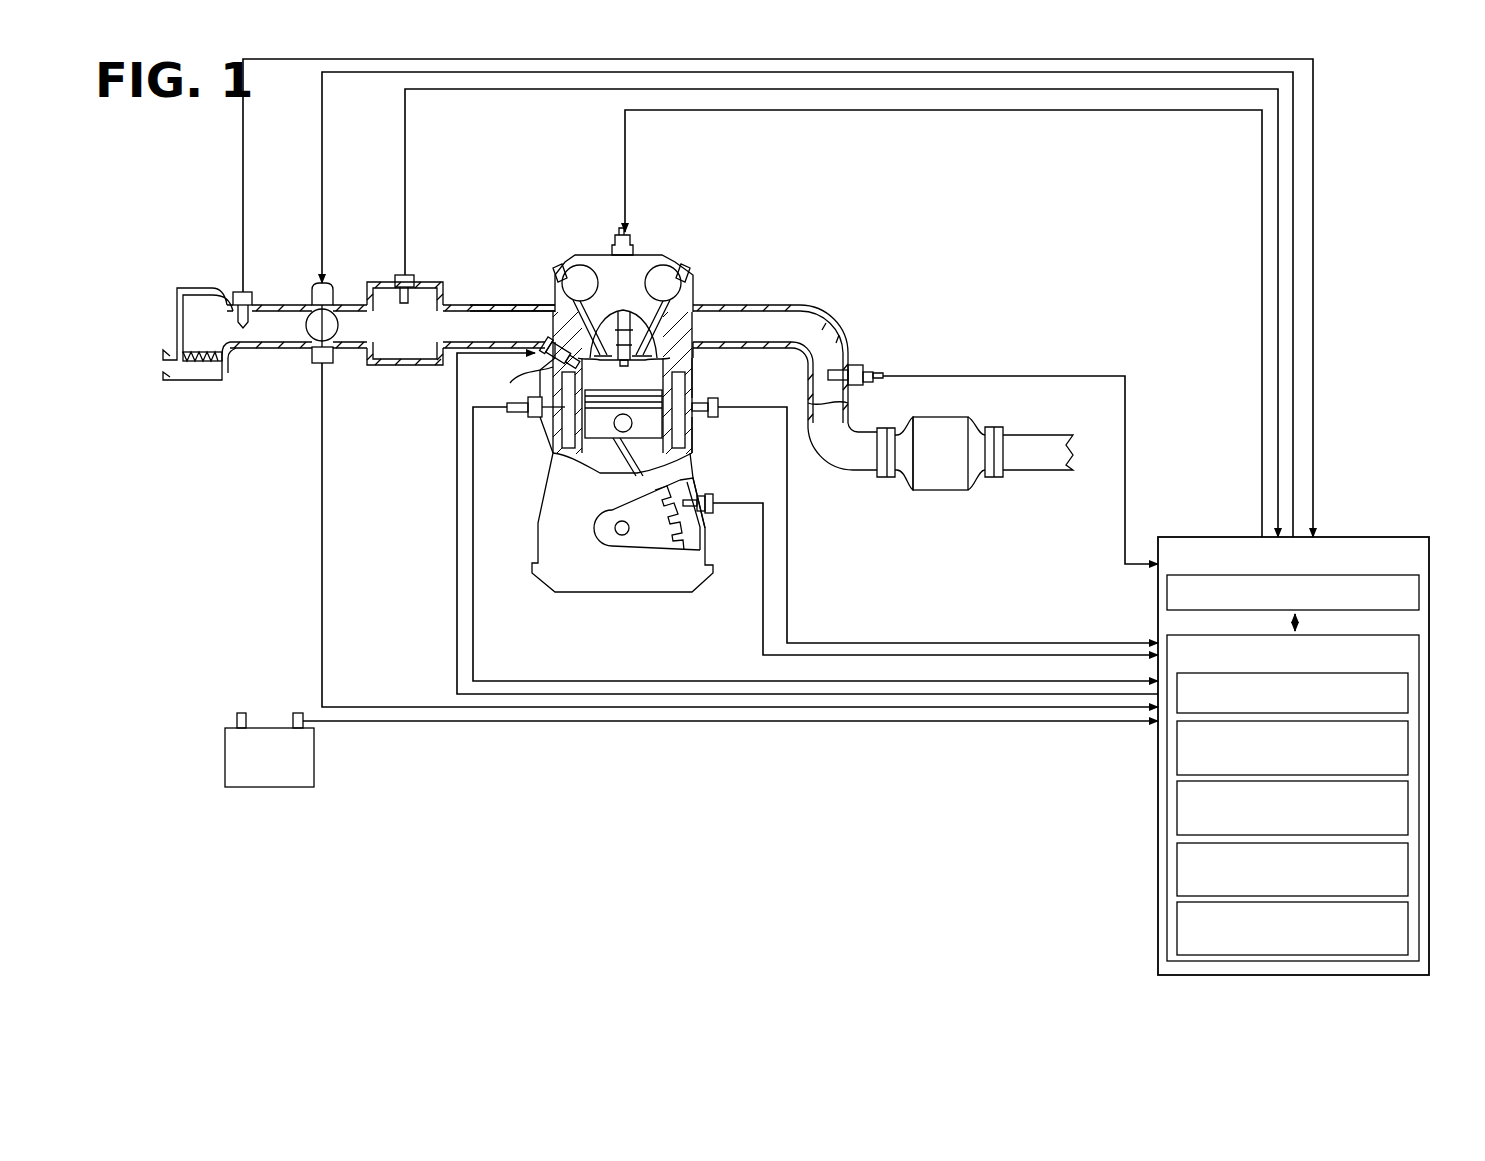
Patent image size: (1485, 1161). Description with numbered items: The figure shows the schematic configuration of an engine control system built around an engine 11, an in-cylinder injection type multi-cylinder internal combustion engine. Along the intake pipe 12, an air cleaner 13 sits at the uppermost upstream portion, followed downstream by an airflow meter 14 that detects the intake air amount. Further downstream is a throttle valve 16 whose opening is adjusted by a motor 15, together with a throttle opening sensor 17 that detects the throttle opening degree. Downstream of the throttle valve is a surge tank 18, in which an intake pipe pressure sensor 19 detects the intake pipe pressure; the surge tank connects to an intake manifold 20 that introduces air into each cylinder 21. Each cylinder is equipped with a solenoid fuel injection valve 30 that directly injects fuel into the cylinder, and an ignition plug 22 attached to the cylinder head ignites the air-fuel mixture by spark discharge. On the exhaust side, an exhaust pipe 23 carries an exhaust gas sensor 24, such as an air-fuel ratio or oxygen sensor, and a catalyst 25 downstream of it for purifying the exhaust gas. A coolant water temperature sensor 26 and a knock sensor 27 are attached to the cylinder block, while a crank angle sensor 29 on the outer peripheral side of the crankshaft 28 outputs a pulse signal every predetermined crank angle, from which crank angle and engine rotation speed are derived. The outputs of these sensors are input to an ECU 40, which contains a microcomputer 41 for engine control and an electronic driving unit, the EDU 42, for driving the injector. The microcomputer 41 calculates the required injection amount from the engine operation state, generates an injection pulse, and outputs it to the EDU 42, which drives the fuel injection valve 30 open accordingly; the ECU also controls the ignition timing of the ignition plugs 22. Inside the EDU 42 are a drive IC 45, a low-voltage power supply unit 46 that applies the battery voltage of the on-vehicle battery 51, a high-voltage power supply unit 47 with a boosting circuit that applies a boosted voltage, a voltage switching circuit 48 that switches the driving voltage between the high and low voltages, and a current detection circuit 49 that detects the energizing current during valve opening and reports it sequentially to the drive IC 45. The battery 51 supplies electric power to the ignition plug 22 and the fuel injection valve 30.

The engine 11 is at (665, 255).
The intake pipe 12 is at (273, 303).
The air cleaner 13 is at (198, 358).
The airflow meter 14 is at (240, 290).
The motor 15 is at (313, 290).
The throttle valve 16 is at (307, 325).
The throttle opening sensor 17 is at (330, 367).
The surge tank 18 is at (403, 367).
The intake pipe pressure sensor 19 is at (400, 275).
The intake manifold 20 is at (497, 303).
The cylinder 21 is at (707, 377).
The ignition plug 22 is at (630, 342).
The exhaust pipe 23 is at (795, 303).
The exhaust gas sensor 24 is at (868, 332).
The catalyst 25 is at (935, 412).
The coolant water temperature sensor 26 is at (535, 417).
The knock sensor 27 is at (718, 420).
The crankshaft 28 is at (622, 536).
The crank angle sensor 29 is at (710, 512).
The fuel injection valve 30 is at (540, 357).
The ECU 40 is at (1315, 727).
The microcomputer 41 is at (1419, 592).
The electronic driving unit (EDU) 42 is at (1419, 648).
The drive IC 45 is at (1408, 692).
The low-voltage power supply unit 46 is at (1408, 748).
The high-voltage power supply unit 47 is at (1408, 808).
The voltage switching circuit 48 is at (1408, 868).
The current detection circuit 49 is at (1408, 928).
The battery 51 is at (314, 762).